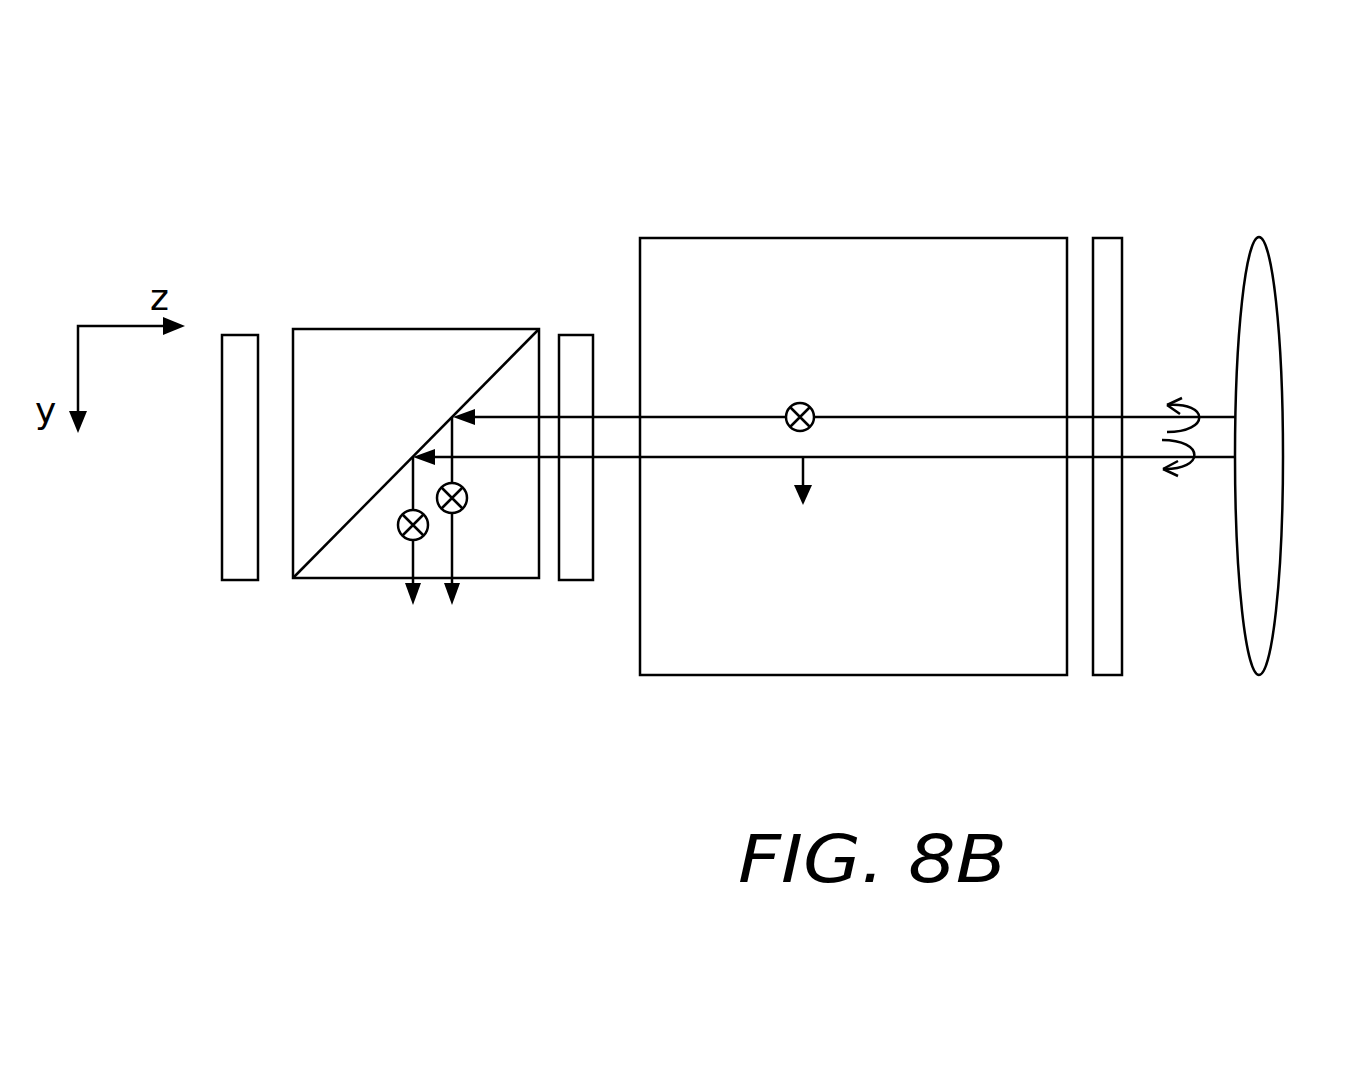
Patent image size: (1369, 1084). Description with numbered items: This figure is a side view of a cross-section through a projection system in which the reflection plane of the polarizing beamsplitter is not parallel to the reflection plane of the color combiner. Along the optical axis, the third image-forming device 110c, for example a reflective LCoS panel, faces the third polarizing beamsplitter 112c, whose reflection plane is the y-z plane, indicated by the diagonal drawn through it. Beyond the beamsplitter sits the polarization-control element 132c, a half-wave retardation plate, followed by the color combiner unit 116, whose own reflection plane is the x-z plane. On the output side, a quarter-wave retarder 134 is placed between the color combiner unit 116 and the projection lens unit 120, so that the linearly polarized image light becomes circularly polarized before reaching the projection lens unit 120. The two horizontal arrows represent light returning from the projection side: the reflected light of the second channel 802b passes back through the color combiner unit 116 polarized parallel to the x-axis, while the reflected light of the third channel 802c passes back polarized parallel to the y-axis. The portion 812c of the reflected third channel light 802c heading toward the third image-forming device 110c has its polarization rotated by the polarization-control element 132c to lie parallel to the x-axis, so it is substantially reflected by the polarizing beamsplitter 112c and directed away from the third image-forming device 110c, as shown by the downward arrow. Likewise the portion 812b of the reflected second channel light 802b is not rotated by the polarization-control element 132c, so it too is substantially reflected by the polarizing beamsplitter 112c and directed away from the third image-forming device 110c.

The image-forming device 110c is at (235, 335).
The polarizing beamsplitter 112c is at (390, 329).
The polarization-control element 132c is at (575, 335).
The color combiner unit 116 is at (680, 240).
The quarter-wave retarder 134 is at (1113, 238).
The projection lens unit 120 is at (1258, 237).
The reflected light of the second channel 802b is at (878, 417).
The reflected light of the third channel 802c is at (922, 457).
The portion of the reflected second channel light 812b is at (452, 537).
The portion of the reflected third channel light 812c is at (408, 572).